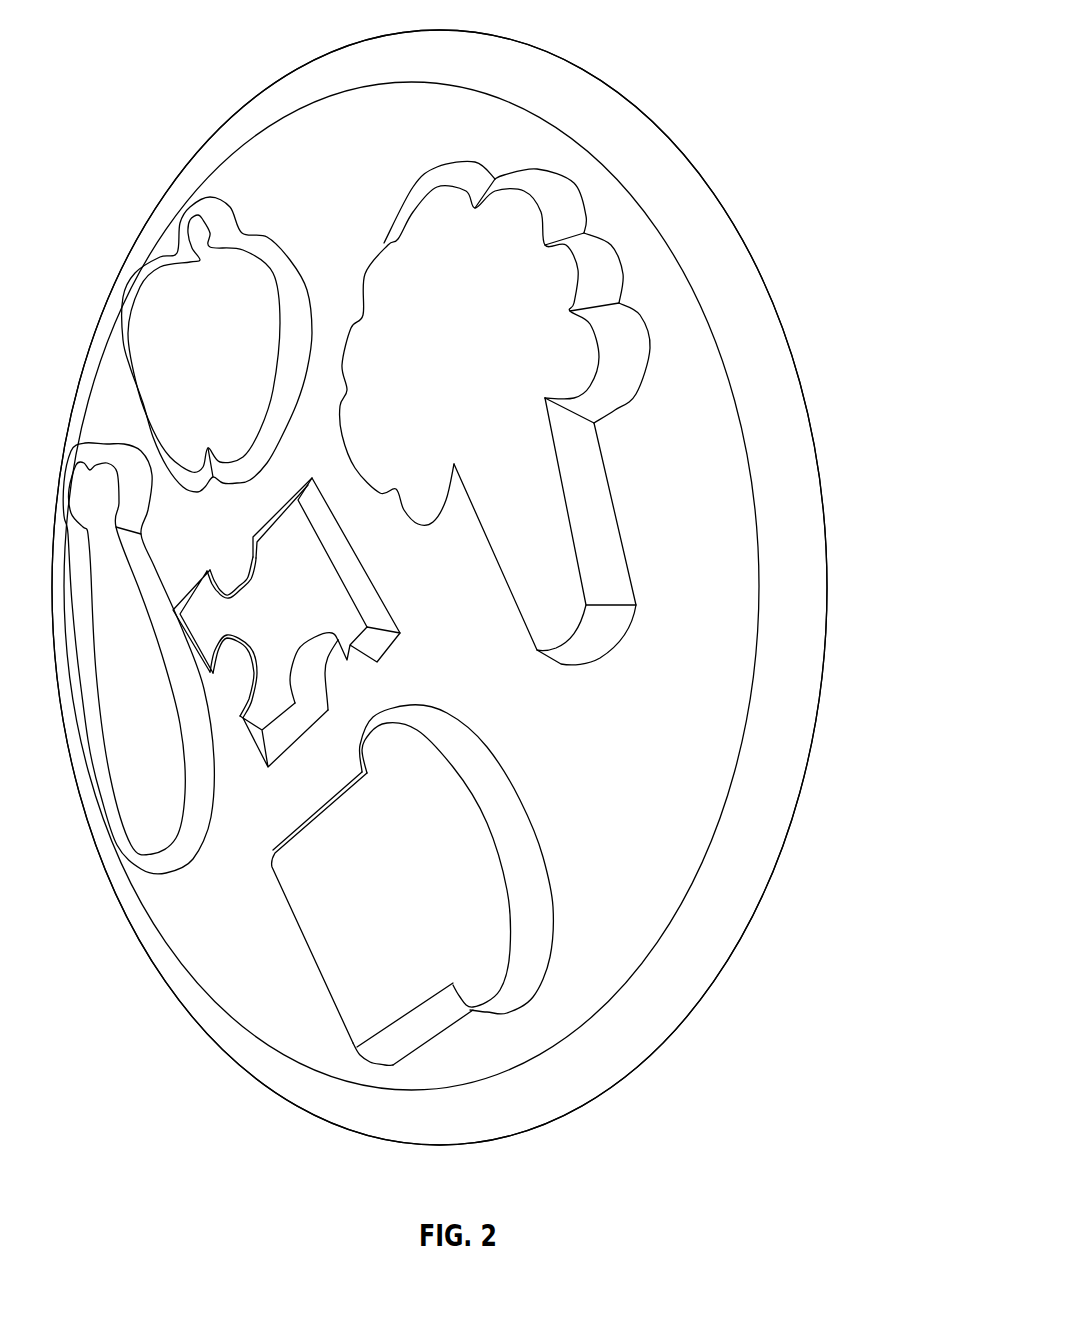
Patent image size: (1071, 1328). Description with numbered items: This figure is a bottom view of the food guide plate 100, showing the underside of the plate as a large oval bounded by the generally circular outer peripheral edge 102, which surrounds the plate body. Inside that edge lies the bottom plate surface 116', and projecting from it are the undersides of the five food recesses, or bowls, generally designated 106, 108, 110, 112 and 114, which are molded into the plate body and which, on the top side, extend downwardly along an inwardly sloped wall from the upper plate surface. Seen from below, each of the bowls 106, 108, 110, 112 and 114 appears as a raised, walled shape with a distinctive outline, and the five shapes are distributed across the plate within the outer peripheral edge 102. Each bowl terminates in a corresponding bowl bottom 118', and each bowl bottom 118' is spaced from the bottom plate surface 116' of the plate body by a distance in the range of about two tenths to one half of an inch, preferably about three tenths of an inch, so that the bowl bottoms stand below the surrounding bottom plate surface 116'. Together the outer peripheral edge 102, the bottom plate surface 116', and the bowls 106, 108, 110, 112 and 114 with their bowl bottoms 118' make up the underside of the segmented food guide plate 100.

The food guide plate 100 is at (660, 45).
The outer peripheral edge 102 is at (750, 252).
The food recess (bowl) 106 is at (360, 987).
The food recess (bowl) 108 is at (128, 823).
The food recess (bowl) 110 is at (268, 700).
The food recess (bowl) 112 is at (168, 297).
The food recess (bowl) 114 is at (532, 280).
The bottom plate surface 116' is at (449, 586).
The bowl bottoms 118' is at (294, 611).